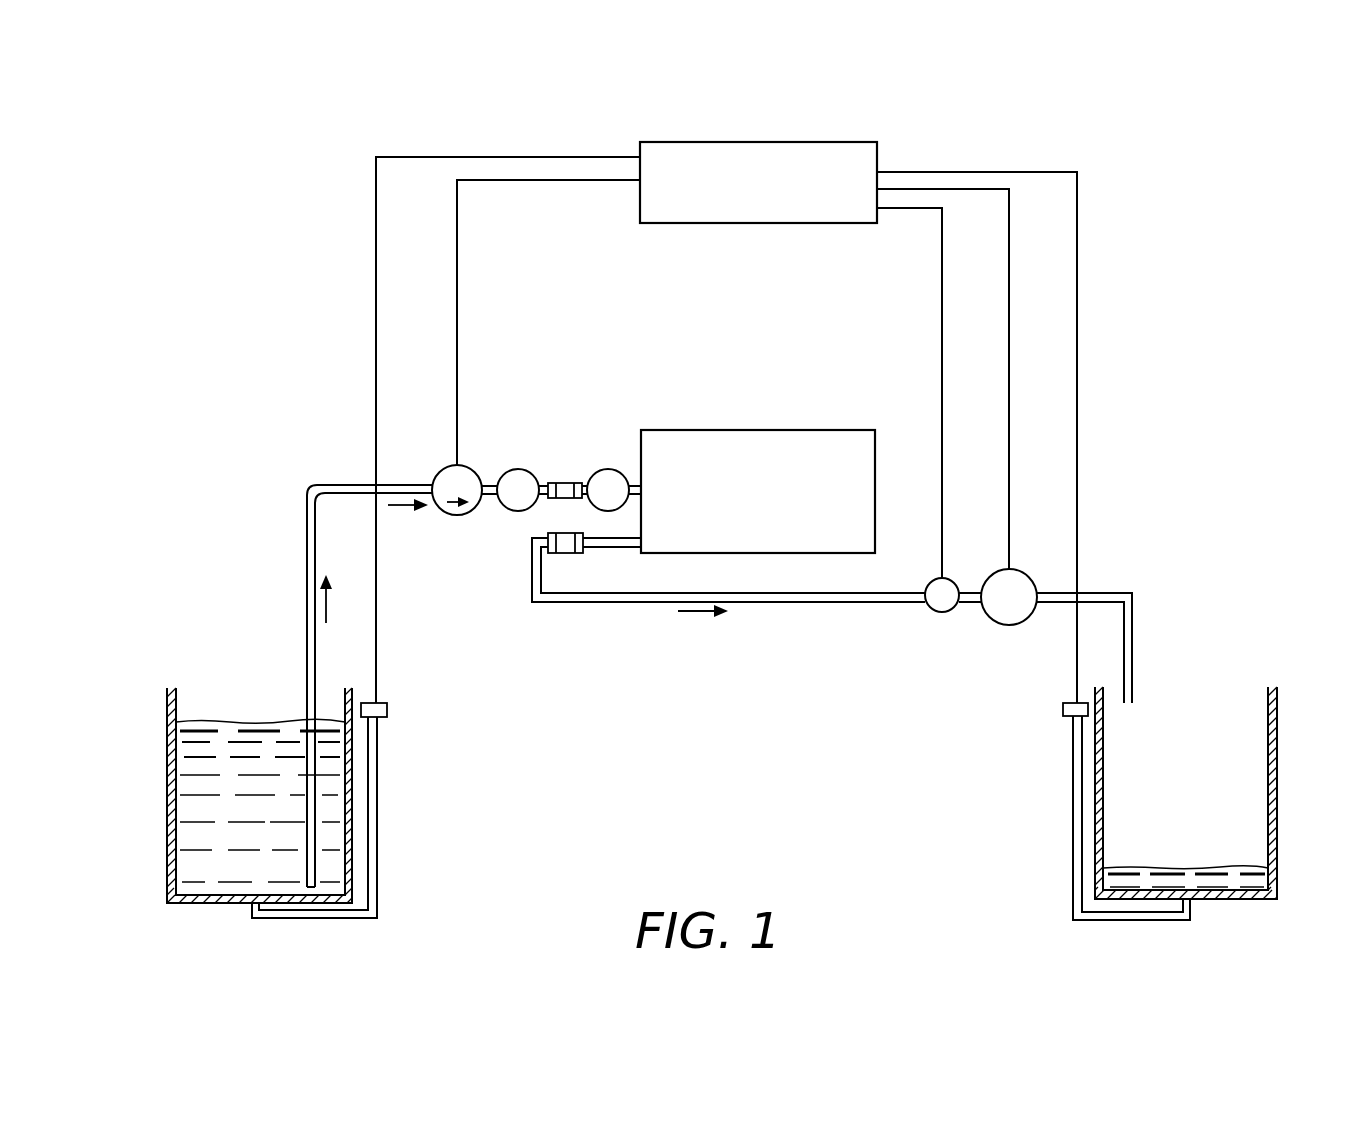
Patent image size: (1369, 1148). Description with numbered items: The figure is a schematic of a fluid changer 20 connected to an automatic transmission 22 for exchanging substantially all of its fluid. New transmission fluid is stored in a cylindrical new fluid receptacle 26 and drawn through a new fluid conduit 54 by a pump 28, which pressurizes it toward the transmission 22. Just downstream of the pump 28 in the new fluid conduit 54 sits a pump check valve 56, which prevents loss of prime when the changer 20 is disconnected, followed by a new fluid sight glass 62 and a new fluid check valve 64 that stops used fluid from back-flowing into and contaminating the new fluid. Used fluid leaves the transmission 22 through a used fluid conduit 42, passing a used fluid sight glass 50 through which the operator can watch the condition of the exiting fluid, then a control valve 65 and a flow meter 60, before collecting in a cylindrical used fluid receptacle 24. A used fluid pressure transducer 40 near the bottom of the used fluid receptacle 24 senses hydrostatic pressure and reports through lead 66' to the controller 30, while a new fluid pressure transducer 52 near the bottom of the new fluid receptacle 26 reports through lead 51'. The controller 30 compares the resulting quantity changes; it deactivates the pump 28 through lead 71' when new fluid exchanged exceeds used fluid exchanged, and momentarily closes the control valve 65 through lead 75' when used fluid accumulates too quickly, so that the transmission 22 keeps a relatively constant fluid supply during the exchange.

The fluid changer 20 is at (310, 242).
The automatic transmission 22 is at (774, 422).
The used fluid receptacle 24 is at (1278, 772).
The new fluid receptacle 26 is at (167, 742).
The pump 28 is at (463, 466).
The controller 30 is at (819, 136).
The used fluid pressure transducer 40 is at (1073, 797).
The used fluid conduit 42 is at (817, 604).
The used fluid sight glass 50 is at (560, 554).
The lead 51' is at (481, 430).
The new fluid pressure transducer 52 is at (378, 805).
The new fluid conduit 54 is at (307, 585).
The pump check valve 56 is at (520, 469).
The flow meter 60 is at (1003, 626).
The new fluid sight glass 62 is at (567, 481).
The new fluid check valve 64 is at (604, 470).
The control valve 65 is at (938, 613).
The lead 66' is at (1007, 437).
The lead 71' is at (548, 323).
The lead 75' is at (909, 393).